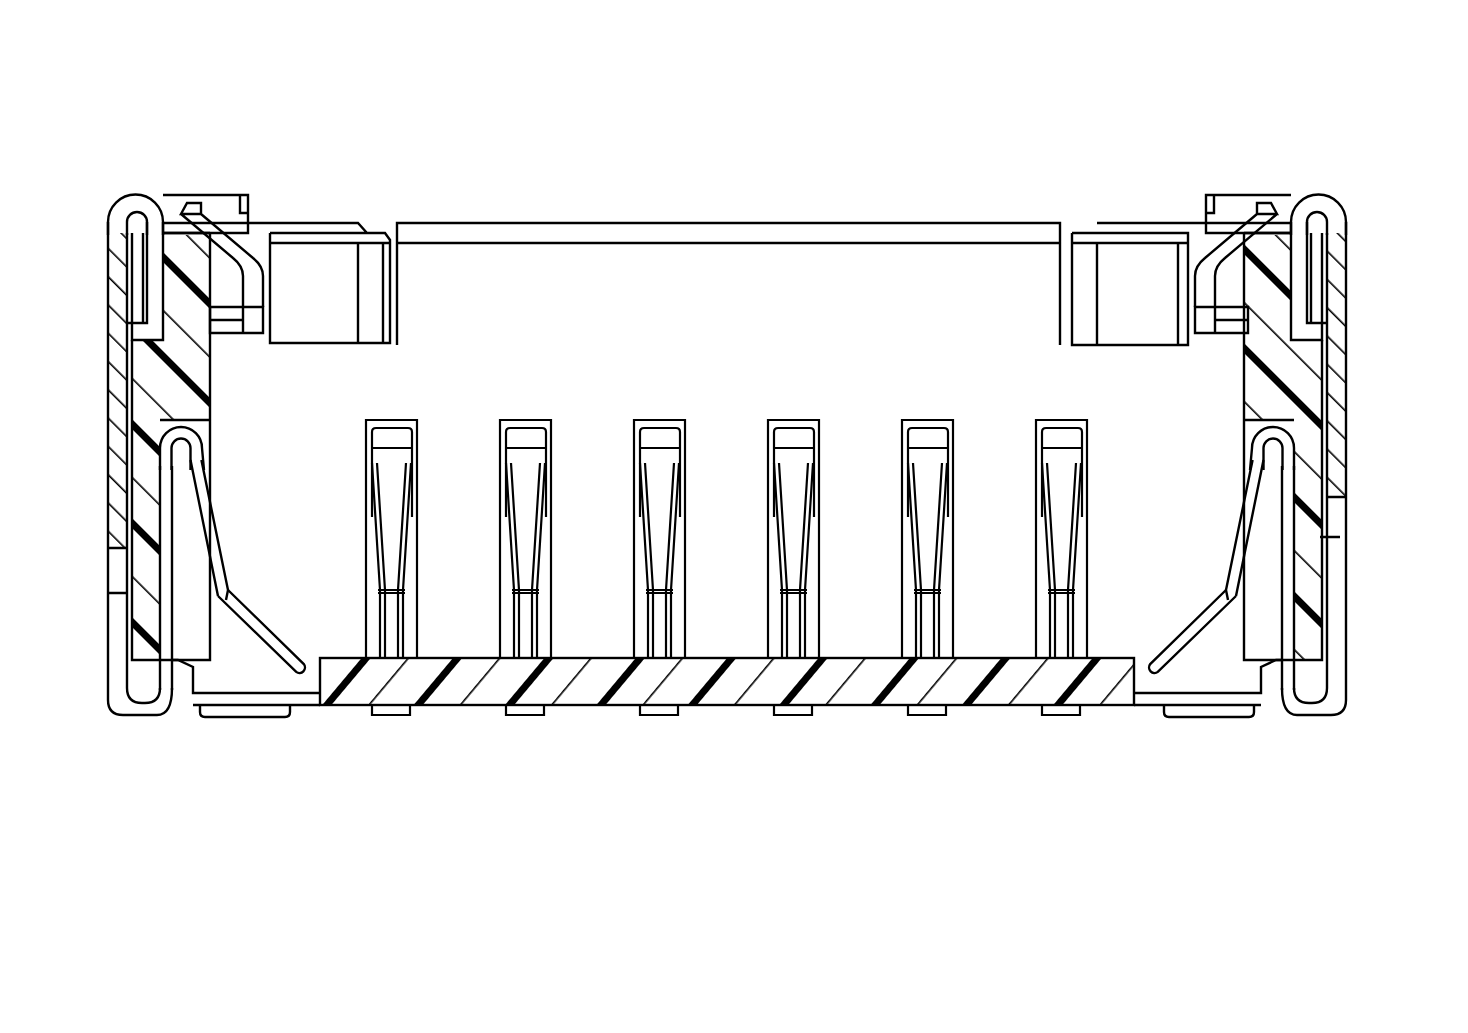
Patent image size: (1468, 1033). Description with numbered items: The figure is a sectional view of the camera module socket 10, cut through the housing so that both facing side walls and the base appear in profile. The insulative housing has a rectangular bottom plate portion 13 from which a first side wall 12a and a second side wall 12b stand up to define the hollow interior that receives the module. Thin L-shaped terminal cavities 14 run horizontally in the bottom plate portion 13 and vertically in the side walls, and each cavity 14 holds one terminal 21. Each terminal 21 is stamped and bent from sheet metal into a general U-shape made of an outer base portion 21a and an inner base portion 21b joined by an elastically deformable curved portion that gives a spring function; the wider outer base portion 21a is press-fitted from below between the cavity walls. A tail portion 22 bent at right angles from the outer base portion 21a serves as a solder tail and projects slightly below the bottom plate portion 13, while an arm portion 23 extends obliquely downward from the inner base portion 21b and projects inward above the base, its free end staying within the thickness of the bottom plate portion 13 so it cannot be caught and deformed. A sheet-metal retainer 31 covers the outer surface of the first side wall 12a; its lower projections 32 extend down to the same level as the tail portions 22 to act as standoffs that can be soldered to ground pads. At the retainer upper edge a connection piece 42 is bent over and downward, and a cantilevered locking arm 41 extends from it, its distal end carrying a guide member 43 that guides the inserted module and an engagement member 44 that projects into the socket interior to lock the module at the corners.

The camera module socket 10 is at (1200, 98).
The first side wall 12a is at (1312, 368).
The second side wall 12b is at (930, 272).
The bottom plate portion 13 is at (990, 690).
The terminal-receiving cavity 14 is at (1258, 646).
The terminal 21 is at (195, 437).
The outer base portion 21a is at (168, 488).
The inner base portion 21b is at (216, 544).
The tail portion 22 is at (120, 712).
The arm portion 23 is at (265, 636).
The retainer 31 is at (1334, 268).
The lower projection 32 is at (1332, 631).
The locking arm 41 is at (1302, 258).
The connection piece 42 is at (1324, 216).
The guide member 43 is at (1250, 220).
The engagement member 44 is at (1219, 326).